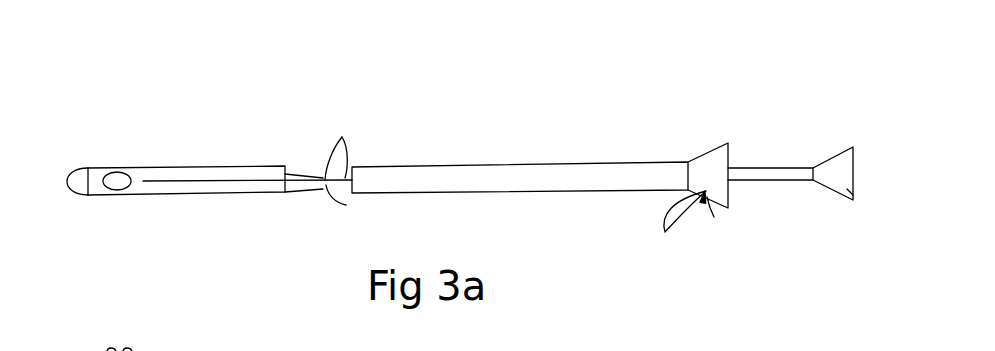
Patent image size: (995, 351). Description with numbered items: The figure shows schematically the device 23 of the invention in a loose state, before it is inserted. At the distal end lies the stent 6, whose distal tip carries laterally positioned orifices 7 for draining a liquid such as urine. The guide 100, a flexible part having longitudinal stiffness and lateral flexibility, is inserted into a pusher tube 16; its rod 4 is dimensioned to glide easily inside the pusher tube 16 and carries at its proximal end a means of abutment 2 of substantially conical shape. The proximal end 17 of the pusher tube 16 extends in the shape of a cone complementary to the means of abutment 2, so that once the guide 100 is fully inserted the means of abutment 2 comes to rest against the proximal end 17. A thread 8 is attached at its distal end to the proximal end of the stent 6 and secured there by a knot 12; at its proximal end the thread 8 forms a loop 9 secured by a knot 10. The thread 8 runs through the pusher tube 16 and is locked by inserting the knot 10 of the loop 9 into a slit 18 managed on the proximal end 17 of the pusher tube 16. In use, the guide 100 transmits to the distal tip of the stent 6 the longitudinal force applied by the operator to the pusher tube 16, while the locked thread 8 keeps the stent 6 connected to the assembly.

The device 23 is at (202, 97).
The stent 6 is at (175, 202).
The orifices 7 is at (117, 177).
The guide 100 is at (262, 181).
The knot 12 is at (325, 182).
The thread 8 is at (342, 138).
The pusher tube 16 is at (553, 164).
The proximal end of the pusher tube 17 is at (713, 151).
The rod 4 is at (780, 168).
The means of abutment 2 is at (837, 155).
The loop 9 is at (665, 232).
The knot 10 is at (703, 200).
The slit 18 is at (717, 196).